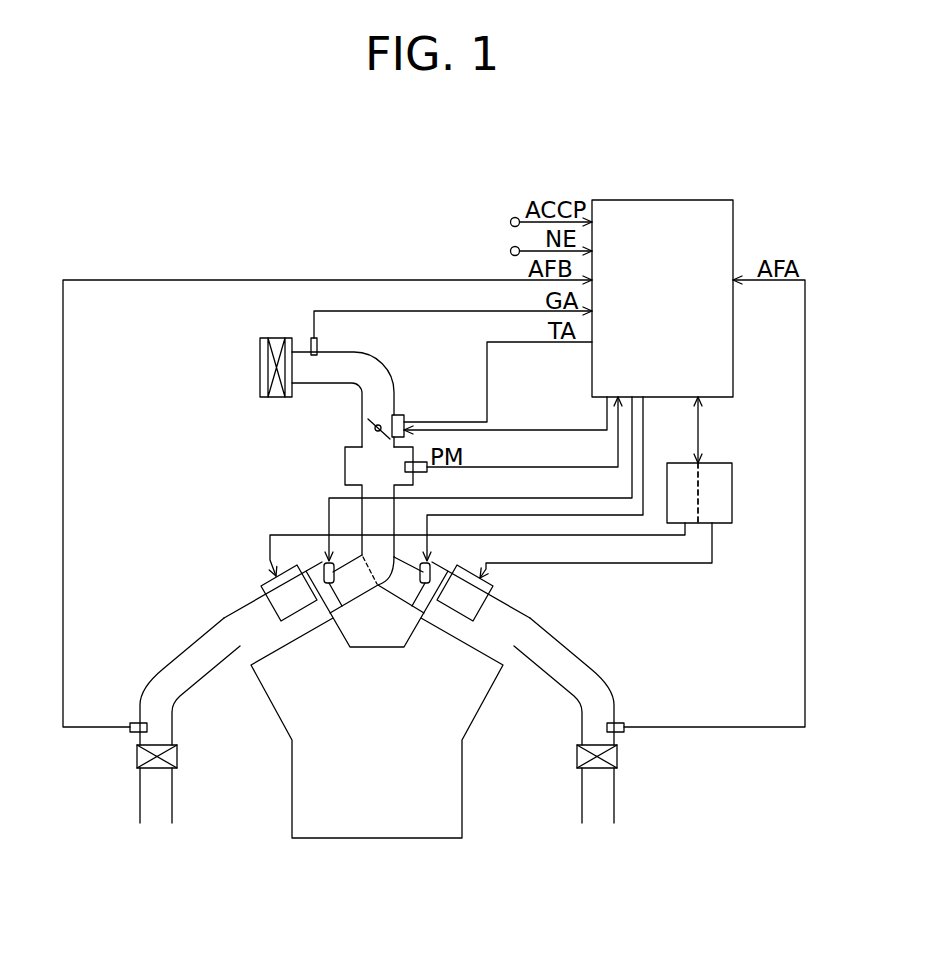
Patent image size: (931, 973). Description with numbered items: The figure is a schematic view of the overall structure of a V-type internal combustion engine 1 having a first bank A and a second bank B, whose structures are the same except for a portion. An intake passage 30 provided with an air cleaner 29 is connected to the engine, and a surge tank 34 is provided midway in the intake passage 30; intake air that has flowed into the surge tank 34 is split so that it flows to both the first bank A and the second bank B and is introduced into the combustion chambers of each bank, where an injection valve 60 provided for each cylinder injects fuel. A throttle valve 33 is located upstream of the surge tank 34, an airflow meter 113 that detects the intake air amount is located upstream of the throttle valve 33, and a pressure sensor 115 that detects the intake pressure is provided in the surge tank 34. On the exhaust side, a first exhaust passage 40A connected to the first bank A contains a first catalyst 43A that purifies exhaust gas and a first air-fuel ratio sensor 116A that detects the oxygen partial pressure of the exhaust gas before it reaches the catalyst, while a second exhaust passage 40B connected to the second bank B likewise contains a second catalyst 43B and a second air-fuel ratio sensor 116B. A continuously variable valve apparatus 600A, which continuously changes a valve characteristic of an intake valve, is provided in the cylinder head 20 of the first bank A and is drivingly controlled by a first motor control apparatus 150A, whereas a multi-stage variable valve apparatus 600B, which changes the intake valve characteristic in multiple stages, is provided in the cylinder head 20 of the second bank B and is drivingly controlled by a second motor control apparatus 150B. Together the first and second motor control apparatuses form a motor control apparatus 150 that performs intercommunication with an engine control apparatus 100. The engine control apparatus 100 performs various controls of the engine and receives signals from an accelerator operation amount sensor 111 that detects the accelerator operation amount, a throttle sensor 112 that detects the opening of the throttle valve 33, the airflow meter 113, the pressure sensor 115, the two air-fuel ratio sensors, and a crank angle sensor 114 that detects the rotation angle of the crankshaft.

The internal combustion engine 1 is at (484, 778).
The cylinder head 20 is at (222, 611).
The air cleaner 29 is at (268, 338).
The intake passage 30 is at (385, 357).
The throttle valve 33 is at (374, 428).
The surge tank 34 is at (345, 465).
The first exhaust passage 40A is at (587, 662).
The second exhaust passage 40B is at (166, 662).
The first catalyst 43A is at (618, 756).
The second catalyst 43B is at (137, 757).
The injection valve 60 is at (324, 566).
The engine control apparatus 100 is at (733, 222).
The accelerator operation amount sensor 111 is at (510, 222).
The crank angle sensor 114 is at (510, 251).
The throttle sensor 112 is at (406, 418).
The airflow meter 113 is at (318, 346).
The pressure sensor 115 is at (420, 474).
The first air-fuel ratio sensor 116A is at (624, 722).
The second air-fuel ratio sensor 116B is at (130, 726).
The motor control apparatus 150 is at (733, 480).
The first motor control apparatus 150A is at (728, 519).
The second motor control apparatus 150B is at (680, 466).
The continuously variable valve apparatus 600A is at (492, 576).
The multi-stage variable valve apparatus 600B is at (262, 580).
The first bank A is at (493, 688).
The second bank B is at (262, 688).